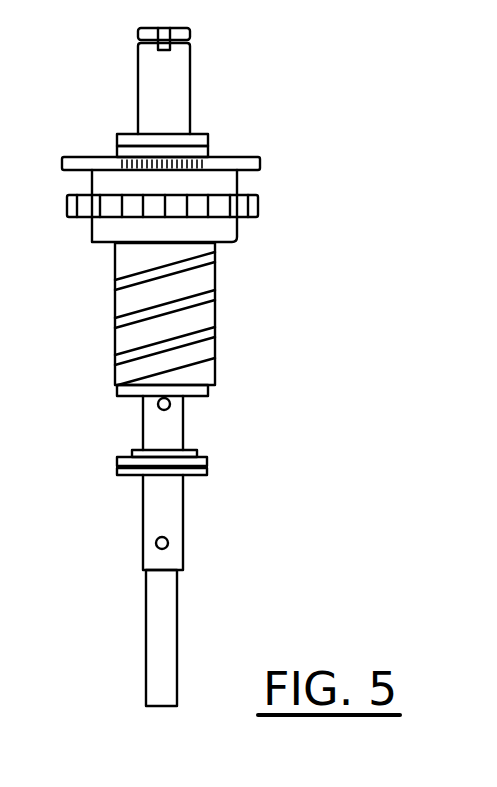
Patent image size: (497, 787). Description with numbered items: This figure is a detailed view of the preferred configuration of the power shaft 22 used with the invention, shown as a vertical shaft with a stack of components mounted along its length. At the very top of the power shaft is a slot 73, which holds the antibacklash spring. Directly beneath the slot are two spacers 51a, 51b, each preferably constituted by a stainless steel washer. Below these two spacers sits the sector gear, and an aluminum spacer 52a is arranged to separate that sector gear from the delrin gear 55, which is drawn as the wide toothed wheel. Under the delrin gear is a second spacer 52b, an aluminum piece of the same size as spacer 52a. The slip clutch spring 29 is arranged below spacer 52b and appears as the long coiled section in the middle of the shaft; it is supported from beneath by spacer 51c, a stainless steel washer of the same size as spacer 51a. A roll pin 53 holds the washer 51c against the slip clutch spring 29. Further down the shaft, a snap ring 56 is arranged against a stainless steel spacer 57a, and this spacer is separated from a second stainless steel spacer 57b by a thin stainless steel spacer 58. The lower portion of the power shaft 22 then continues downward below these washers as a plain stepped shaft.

The slot 73 is at (165, 31).
The spacer 51a is at (208, 137).
The spacer 51b is at (212, 147).
The aluminum spacer 52a is at (260, 164).
The second spacer 52b is at (237, 243).
The delrin gear 55 is at (260, 203).
The slip clutch spring 29 is at (215, 318).
The spacer 51c is at (208, 395).
The roll pin 53 is at (170, 404).
The snap ring 56 is at (197, 452).
The stainless steel spacer 57a is at (207, 462).
The stainless steel spacer 58 is at (207, 466).
The second stainless steel spacer 57b is at (207, 470).
The power shaft 22 is at (143, 504).